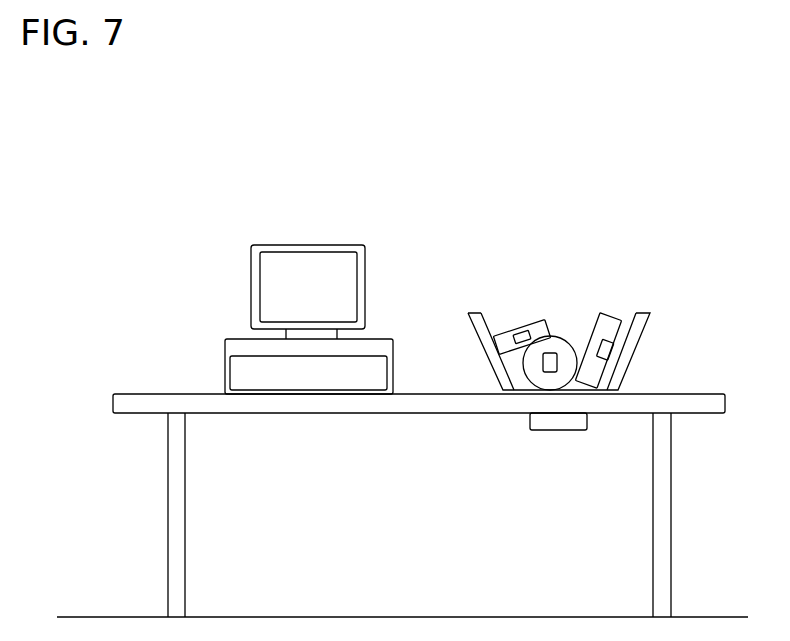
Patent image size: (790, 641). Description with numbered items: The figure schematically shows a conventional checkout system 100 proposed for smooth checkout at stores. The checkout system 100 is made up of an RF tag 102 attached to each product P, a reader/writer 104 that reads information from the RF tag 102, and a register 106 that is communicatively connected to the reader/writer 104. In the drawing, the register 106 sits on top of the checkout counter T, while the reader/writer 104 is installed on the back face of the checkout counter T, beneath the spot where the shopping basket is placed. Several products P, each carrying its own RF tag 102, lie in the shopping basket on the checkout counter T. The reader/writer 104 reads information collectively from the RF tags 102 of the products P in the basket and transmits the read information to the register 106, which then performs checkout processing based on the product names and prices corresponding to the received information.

The checkout system 100 is at (217, 144).
The RF tag 102 is at (522, 320).
The reader/writer 104 is at (550, 420).
The register 106 is at (383, 256).
The checkout counter T is at (697, 400).
The product P is at (548, 322).